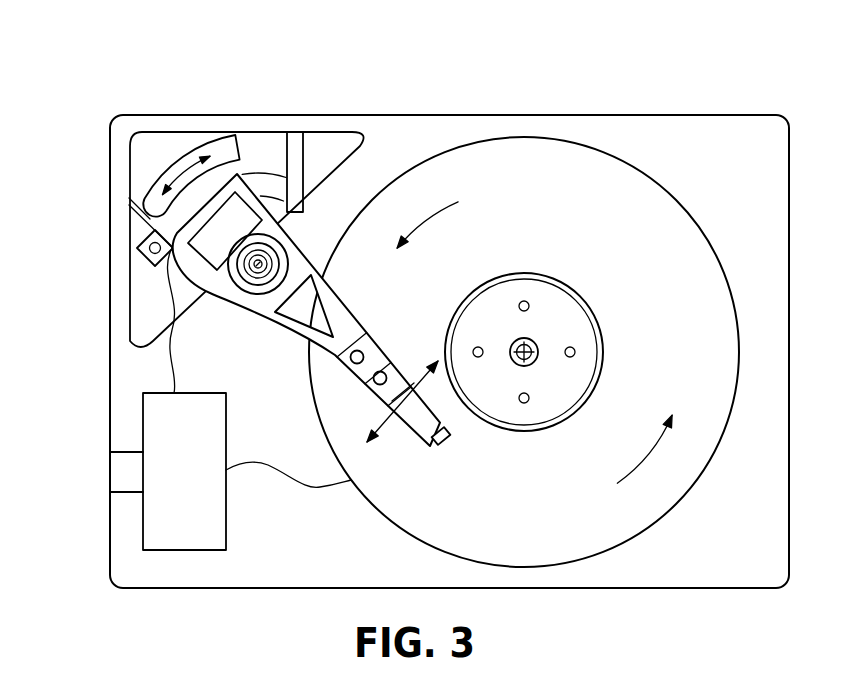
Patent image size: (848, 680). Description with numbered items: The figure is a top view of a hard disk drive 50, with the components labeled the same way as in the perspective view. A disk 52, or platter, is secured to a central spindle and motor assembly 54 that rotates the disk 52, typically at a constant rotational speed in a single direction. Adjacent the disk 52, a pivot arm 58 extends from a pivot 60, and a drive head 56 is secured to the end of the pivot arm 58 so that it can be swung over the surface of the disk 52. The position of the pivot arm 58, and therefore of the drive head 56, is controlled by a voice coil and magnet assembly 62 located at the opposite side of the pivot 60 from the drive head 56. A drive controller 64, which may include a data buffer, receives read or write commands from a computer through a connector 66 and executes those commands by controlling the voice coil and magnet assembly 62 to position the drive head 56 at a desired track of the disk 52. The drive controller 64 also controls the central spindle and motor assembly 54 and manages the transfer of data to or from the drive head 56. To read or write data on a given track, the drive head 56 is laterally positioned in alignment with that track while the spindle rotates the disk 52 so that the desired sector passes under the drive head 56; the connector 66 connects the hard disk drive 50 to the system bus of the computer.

The hard disk drive 50 is at (99, 72).
The disk 52 is at (686, 247).
The central spindle and motor assembly 54 is at (527, 343).
The drive head 56 is at (447, 444).
The pivot arm 58 is at (312, 336).
The pivot 60 is at (262, 260).
The voice coil and magnet assembly 62 is at (243, 133).
The drive controller 64 is at (167, 405).
The connector 66 is at (128, 468).